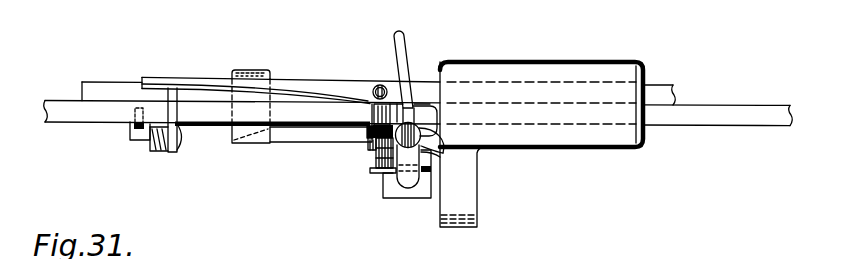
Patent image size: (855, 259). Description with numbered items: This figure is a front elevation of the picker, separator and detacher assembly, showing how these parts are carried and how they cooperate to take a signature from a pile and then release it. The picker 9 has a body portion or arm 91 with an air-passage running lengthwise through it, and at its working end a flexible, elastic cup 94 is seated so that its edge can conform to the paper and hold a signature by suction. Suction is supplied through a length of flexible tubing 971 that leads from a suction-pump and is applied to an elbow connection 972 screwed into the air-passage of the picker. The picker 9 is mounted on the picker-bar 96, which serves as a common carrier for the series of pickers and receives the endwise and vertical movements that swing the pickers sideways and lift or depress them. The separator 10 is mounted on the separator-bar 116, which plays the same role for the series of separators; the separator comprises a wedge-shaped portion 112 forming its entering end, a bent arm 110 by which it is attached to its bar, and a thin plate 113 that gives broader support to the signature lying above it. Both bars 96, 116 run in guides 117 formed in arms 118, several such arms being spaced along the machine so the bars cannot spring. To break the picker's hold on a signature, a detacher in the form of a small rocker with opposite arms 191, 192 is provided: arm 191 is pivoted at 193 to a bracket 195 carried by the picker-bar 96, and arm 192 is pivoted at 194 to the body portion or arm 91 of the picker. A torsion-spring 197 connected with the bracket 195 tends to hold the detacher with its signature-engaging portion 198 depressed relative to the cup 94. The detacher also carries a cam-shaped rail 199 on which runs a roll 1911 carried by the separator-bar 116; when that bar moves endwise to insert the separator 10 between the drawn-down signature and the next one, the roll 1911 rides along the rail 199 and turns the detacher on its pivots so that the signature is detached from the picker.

The picker 9 is at (386, 183).
The separator 10 is at (292, 135).
The body portion or arm 91 is at (406, 181).
The cup 94 is at (425, 152).
The bar 96 is at (67, 125).
The bent arm 110 is at (252, 68).
The wedge-shaped portion 112 is at (237, 139).
The thin plate 113 is at (320, 122).
The bar 116 is at (107, 81).
The guides 117 is at (548, 61).
The arms 118 is at (461, 229).
The arm 191 is at (178, 108).
The arm 192 is at (376, 153).
The pivotal connection 193 is at (183, 140).
The pivotal connection 194 is at (367, 126).
The bracket 195 is at (133, 140).
The torsion-spring 197 is at (156, 152).
The signature-engaging portion 198 is at (425, 174).
The cam-shaped rail 199 is at (192, 77).
The flexible tubing 971 is at (406, 32).
The elbow connection 972 is at (418, 137).
The roll 1911 is at (389, 86).